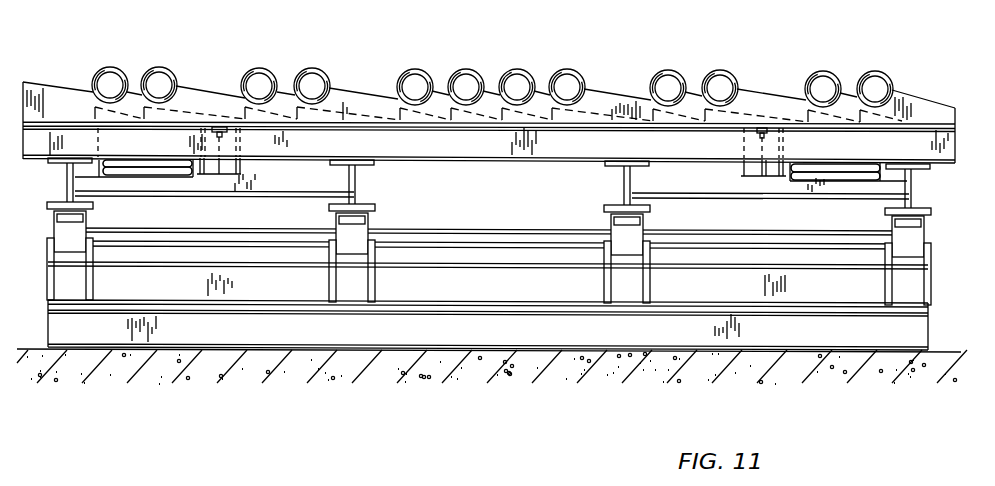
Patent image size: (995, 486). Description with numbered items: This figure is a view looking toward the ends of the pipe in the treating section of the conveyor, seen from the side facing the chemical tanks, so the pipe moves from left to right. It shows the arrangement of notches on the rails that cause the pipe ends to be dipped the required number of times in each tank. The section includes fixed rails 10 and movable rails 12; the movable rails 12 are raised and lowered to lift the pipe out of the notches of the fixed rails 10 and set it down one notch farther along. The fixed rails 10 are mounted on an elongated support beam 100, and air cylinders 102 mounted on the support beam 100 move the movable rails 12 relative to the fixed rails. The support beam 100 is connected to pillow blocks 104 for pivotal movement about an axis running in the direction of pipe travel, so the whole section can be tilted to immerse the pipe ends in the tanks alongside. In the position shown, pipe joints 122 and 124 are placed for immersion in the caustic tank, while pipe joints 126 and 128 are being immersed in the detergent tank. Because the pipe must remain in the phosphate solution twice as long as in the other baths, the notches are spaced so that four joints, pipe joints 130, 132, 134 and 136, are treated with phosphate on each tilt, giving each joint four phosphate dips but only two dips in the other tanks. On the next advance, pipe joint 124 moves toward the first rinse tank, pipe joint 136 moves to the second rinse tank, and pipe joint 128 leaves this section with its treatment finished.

The fixed rails 10 is at (351, 97).
The movable rails 12 is at (486, 144).
The support beam 100 is at (357, 186).
The air cylinders 102 is at (166, 172).
The pillow blocks 104 is at (73, 231).
The pipe joint 122 is at (109, 66).
The pipe joint 124 is at (161, 66).
The pipe joint 126 is at (821, 71).
The pipe joint 128 is at (878, 71).
The pipe joint 130 is at (413, 69).
The pipe joint 132 is at (465, 69).
The pipe joint 134 is at (517, 69).
The pipe joint 136 is at (567, 69).